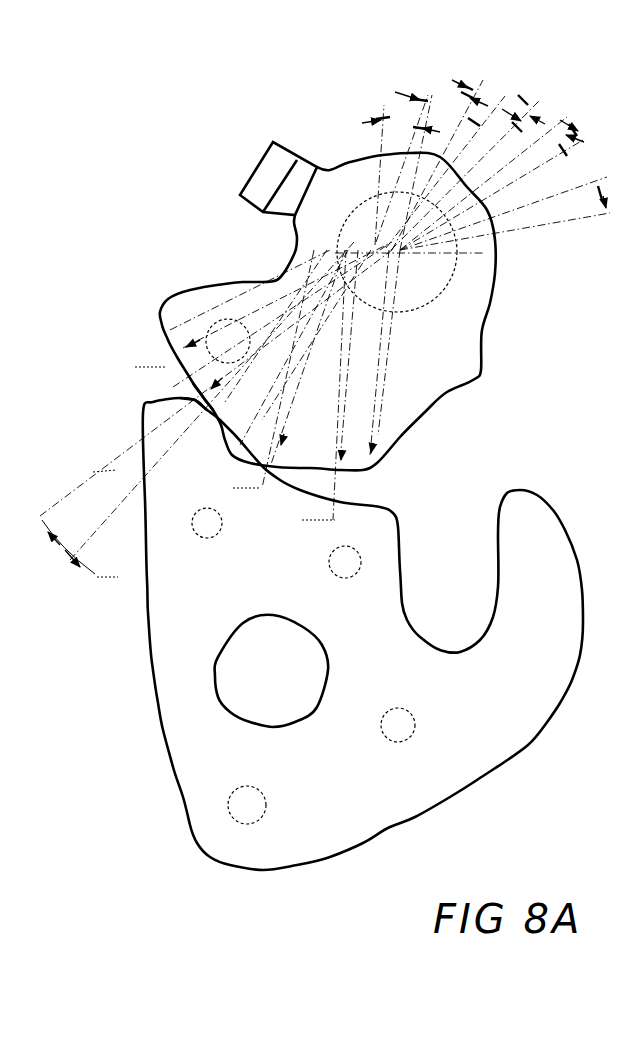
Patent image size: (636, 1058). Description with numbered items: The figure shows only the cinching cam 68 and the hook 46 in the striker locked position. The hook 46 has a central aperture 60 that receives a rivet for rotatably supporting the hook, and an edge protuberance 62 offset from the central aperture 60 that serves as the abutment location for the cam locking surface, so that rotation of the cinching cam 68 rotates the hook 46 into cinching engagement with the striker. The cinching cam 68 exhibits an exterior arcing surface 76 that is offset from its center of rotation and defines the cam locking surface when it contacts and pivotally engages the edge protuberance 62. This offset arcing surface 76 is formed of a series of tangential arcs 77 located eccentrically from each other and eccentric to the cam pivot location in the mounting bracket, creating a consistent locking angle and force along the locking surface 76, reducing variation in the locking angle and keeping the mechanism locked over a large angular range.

The hook 46 is at (497, 737).
The central aperture 60 is at (237, 720).
The edge protuberance 62 is at (187, 402).
The cinching cam 68 is at (468, 343).
The exterior arcing surface 76 is at (166, 340).
The tangential arcs 77 is at (502, 93).